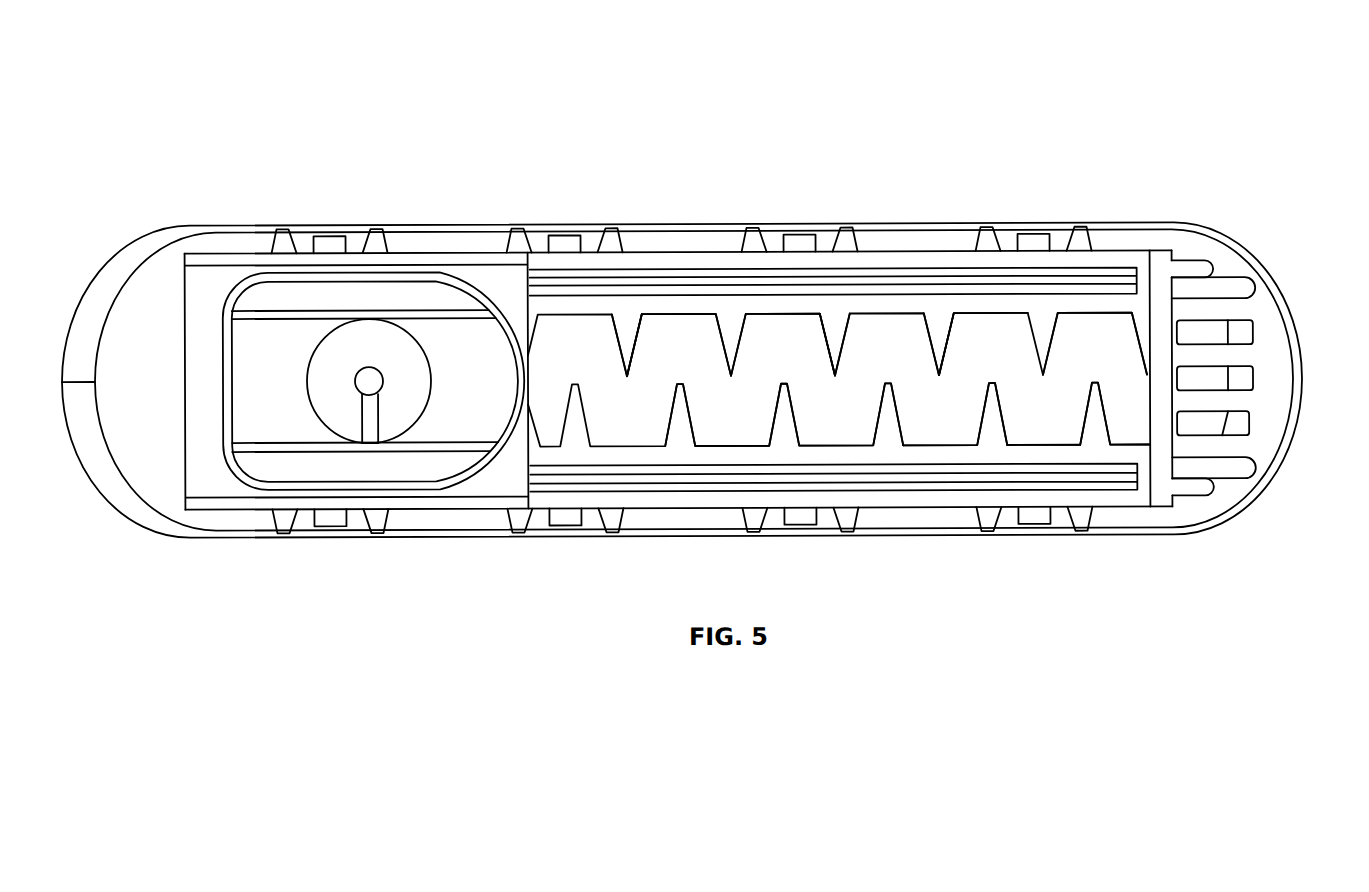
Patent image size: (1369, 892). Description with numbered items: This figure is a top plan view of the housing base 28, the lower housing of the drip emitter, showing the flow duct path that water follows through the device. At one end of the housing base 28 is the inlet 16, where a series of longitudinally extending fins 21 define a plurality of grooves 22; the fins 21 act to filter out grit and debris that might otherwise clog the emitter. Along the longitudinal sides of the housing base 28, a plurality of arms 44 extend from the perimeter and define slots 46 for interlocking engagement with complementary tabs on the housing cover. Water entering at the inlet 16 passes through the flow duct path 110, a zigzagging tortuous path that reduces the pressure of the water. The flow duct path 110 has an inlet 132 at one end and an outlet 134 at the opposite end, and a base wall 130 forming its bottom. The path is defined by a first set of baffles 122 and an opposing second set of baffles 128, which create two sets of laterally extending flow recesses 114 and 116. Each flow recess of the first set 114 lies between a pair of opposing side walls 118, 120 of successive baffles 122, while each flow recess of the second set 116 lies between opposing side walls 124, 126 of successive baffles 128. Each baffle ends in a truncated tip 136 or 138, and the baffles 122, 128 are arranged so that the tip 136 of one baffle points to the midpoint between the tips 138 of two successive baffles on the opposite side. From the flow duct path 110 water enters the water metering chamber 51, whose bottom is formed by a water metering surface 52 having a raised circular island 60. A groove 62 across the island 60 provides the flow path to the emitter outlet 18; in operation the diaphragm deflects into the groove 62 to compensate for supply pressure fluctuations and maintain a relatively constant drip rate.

The inlet 16 is at (1223, 325).
The outlet 18 is at (360, 383).
The fins 21 is at (1252, 334).
The grooves 22 is at (1253, 403).
The housing base 28 is at (221, 137).
The arms 44 is at (540, 530).
The slots 46 is at (566, 530).
The water metering chamber 51 is at (253, 380).
The water metering surface 52 is at (340, 327).
The island 60 is at (393, 428).
The groove 62 is at (397, 403).
The flow duct path 110 is at (917, 430).
The flow recesses 114 is at (704, 348).
The flow recesses 116 is at (755, 435).
The side wall 118 is at (955, 340).
The side wall 120 is at (938, 348).
The first set of baffles 122 is at (737, 325).
The side wall 124 is at (1092, 392).
The side wall 126 is at (1068, 440).
The second set of baffles 128 is at (993, 432).
The base wall 130 is at (1073, 327).
The inlet 132 is at (1170, 300).
The outlet 134 is at (522, 362).
The truncated tip 136 is at (620, 374).
The truncated tip 138 is at (836, 375).